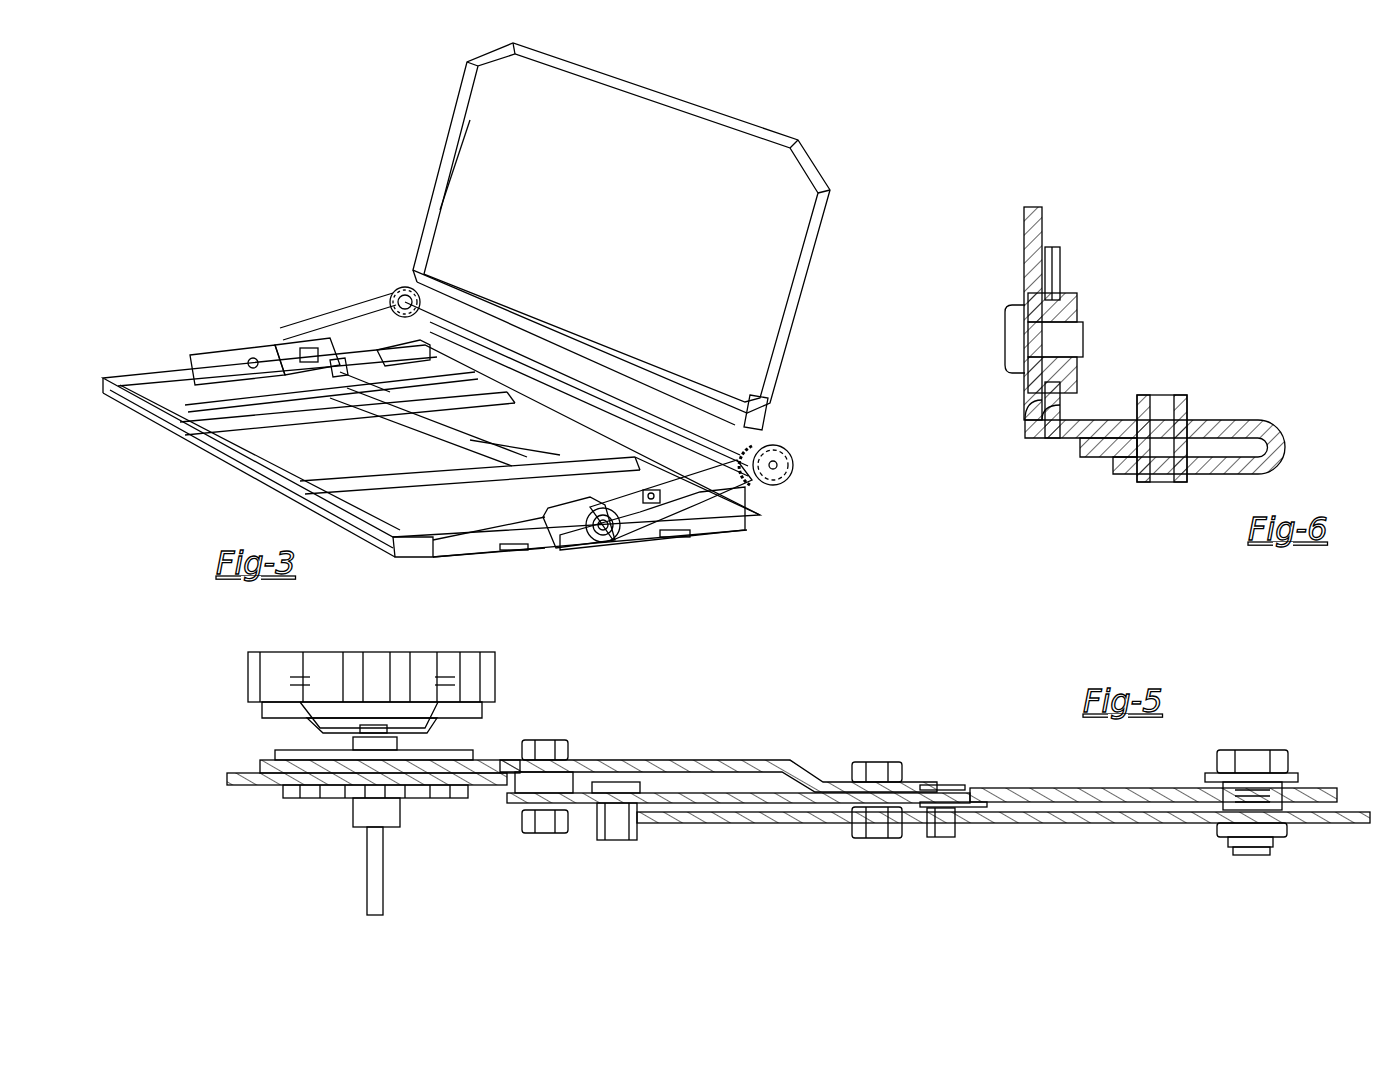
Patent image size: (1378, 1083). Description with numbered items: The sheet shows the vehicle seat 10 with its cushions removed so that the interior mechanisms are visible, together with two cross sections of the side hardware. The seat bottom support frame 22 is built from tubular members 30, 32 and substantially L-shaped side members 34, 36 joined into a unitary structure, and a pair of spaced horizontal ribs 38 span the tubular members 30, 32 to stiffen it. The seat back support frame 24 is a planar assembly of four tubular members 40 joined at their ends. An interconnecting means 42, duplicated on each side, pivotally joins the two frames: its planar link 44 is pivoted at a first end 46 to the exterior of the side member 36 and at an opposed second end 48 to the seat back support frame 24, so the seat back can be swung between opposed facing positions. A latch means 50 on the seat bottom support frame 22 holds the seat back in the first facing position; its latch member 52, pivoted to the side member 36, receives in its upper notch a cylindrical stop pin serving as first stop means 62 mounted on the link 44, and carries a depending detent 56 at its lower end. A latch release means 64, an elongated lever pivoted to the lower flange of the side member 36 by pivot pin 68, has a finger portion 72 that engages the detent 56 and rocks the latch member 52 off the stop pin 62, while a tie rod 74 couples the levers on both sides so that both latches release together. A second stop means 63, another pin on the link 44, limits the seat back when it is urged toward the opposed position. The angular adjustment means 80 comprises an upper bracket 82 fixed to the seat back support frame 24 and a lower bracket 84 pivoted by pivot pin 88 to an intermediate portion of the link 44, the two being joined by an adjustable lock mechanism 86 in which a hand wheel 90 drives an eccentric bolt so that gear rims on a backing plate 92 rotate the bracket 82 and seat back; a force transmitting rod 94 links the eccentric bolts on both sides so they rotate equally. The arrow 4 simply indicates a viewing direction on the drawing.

In FIG. 3, the direction arrow 4 is at (567, 451).
In FIG. 3, the vehicle seat 10 is at (285, 214).
In FIG. 3, the seat bottom support frame 22 is at (431, 448).
In FIG. 3, the seat back support frame 24 is at (621, 234).
In FIG. 3, the tubular member 30 is at (262, 462).
In FIG. 3, the tubular member 32 is at (548, 402).
In FIG. 5, the tubular member 32 is at (1038, 822).
In FIG. 3, the L-shaped side member 34 is at (200, 352).
In FIG. 3, the L-shaped side member 36 is at (476, 550).
In FIG. 6, the L-shaped side member 36 is at (1043, 235).
In FIG. 3, the ribs 38 is at (332, 414).
In FIG. 3, the tubular members 40 is at (440, 240).
In FIG. 3, the interconnecting means 42 is at (300, 310).
In FIG. 3, the planar link 44 is at (568, 520).
In FIG. 5, the planar link 44 is at (1085, 772).
In FIG. 3, the first end 46 is at (603, 540).
In FIG. 3, the second end 48 is at (702, 478).
In FIG. 3, the latch means 50 is at (300, 380).
In FIG. 5, the latch means 50 is at (1003, 757).
In FIG. 3, the latch member 52 is at (250, 352).
In FIG. 6, the latch member 52 is at (1063, 282).
In FIG. 6, the detent 56 is at (1025, 422).
In FIG. 3, the first stop means 62 is at (315, 345).
In FIG. 5, the first stop means 62 is at (945, 838).
In FIG. 6, the first stop means 62 is at (1085, 332).
In FIG. 5, the second stop means 63 is at (602, 838).
In FIG. 3, the latch release means 64 is at (380, 392).
In FIG. 6, the latch release means 64 is at (1108, 412).
In FIG. 3, the pivot pin 68 is at (655, 505).
In FIG. 6, the pivot pin 68 is at (1180, 397).
In FIG. 3, the finger portion 72 is at (335, 383).
In FIG. 6, the finger portion 72 is at (1025, 435).
In FIG. 3, the tie rod 74 is at (502, 440).
In FIG. 3, the angular adjustment means 80 is at (762, 497).
In FIG. 5, the angular adjustment means 80 is at (240, 660).
In FIG. 3, the first bracket member 82 is at (778, 420).
In FIG. 5, the first bracket member 82 is at (445, 798).
In FIG. 3, the second bracket member 84 is at (702, 466).
In FIG. 5, the second bracket member 84 is at (672, 738).
In FIG. 3, the adjustable lock mechanism 86 is at (393, 292).
In FIG. 5, the adjustable lock mechanism 86 is at (240, 700).
In FIG. 5, the pivot pin 88 is at (888, 735).
In FIG. 5, the hand wheel 90 is at (305, 660).
In FIG. 5, the backing plate 92 is at (252, 788).
In FIG. 3, the force transmitting rod 94 is at (592, 374).
In FIG. 5, the force transmitting rod 94 is at (383, 885).